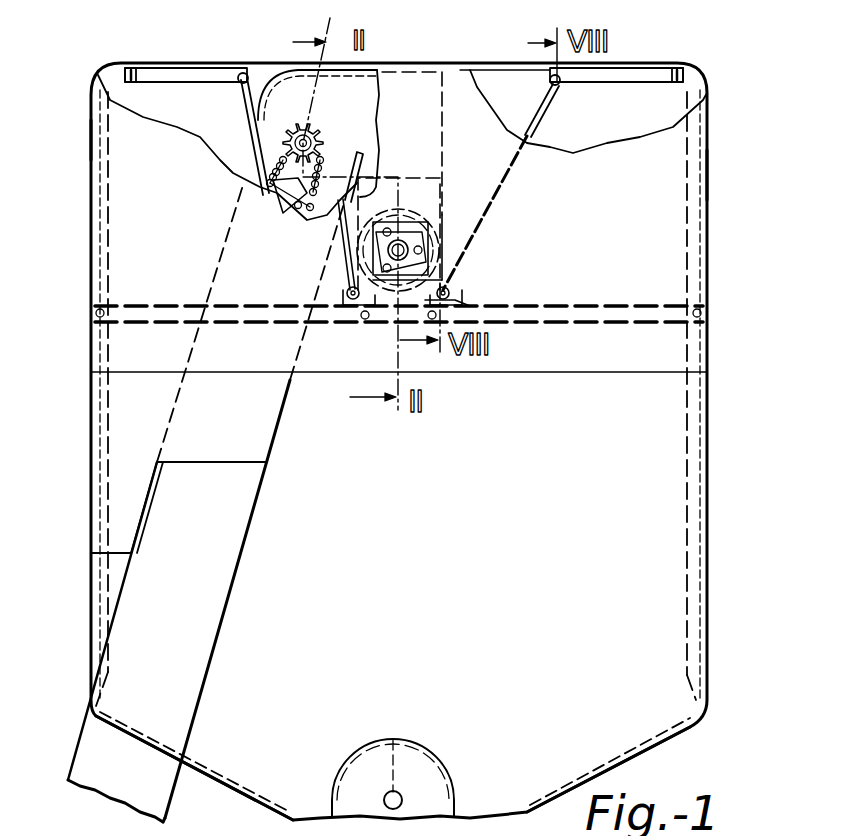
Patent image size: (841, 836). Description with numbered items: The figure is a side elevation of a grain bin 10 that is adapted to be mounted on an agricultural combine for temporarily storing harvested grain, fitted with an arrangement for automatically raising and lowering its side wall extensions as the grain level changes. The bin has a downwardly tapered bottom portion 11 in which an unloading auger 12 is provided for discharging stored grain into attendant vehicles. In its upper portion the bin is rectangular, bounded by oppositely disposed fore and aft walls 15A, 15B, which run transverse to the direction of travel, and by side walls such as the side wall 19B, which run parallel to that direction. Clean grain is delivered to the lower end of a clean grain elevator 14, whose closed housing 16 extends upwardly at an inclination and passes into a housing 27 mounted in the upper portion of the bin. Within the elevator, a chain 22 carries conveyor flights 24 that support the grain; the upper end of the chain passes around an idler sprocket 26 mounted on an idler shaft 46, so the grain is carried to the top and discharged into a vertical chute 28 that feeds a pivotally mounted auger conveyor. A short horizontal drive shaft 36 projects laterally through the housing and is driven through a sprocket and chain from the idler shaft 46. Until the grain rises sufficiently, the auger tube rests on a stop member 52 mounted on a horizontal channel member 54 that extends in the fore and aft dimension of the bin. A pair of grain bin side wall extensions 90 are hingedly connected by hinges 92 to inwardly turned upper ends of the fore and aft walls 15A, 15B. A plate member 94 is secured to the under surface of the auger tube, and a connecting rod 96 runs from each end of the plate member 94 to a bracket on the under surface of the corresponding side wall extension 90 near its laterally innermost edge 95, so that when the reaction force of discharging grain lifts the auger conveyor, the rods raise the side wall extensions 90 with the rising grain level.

The grain bin 10 is at (90, 447).
The downwardly tapered bottom portion 11 is at (235, 795).
The unloading auger 12 is at (432, 763).
The clean grain elevator 14 is at (222, 628).
The fore wall 15A is at (708, 183).
The aft wall 15B is at (92, 160).
The closed housing 16 is at (230, 553).
The side wall 19B is at (550, 496).
The chain 22 is at (263, 177).
The conveyor flights 24 is at (313, 105).
The idler sprocket 26 is at (325, 140).
The housing 27 is at (296, 67).
The vertical chute 28 is at (423, 190).
The drive shaft 36 is at (426, 237).
The idler shaft 46 is at (304, 126).
The stop member 52 is at (332, 251).
The horizontal channel member 54 is at (150, 302).
The grain bin side wall extension 90 is at (178, 66).
The hinge 92 is at (131, 66).
The plate member 94 is at (462, 300).
The laterally innermost edge 95 is at (266, 66).
The connecting rod 96 is at (254, 112).